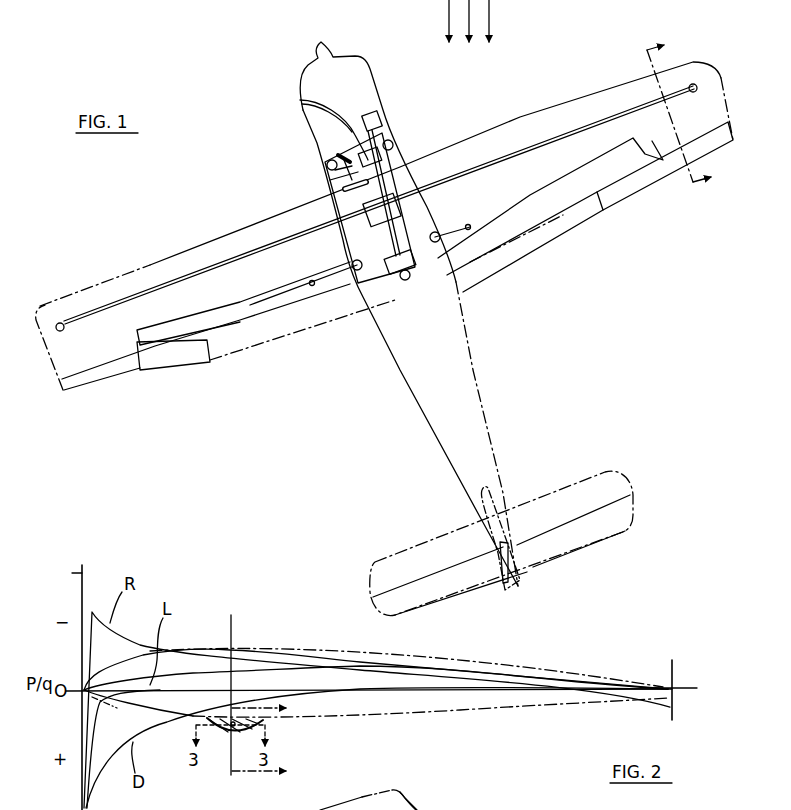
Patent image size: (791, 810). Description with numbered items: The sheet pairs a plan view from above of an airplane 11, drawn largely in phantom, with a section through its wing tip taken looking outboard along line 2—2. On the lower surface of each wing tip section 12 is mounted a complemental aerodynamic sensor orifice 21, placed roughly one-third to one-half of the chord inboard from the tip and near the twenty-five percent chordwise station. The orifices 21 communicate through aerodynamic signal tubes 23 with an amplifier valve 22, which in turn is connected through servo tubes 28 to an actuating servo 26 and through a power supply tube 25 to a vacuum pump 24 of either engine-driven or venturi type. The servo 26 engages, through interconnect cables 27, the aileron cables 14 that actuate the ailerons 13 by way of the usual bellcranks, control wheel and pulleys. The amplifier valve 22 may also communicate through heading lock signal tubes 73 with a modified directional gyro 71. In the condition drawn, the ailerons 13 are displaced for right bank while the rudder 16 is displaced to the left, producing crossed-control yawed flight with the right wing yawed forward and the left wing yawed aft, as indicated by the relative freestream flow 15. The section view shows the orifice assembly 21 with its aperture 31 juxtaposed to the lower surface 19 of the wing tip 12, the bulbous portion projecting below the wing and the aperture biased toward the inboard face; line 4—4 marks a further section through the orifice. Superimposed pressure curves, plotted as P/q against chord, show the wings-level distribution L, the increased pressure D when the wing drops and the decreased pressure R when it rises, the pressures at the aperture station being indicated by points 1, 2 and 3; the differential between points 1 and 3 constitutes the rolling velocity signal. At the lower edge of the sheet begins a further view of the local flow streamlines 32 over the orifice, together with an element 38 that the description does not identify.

In FIG. 2, the pressure point 1 is at (237, 705).
In FIG. 1, the pressure point 2 is at (686, 111).
In FIG. 2, the pressure point 2 is at (238, 695).
In FIG. 2, the pressure point 3 is at (240, 655).
In FIG. 2, the section line 4— 4 is at (271, 742).
In FIG. 1, the airplane 11 is at (433, 390).
In FIG. 1, the wing tip section 12 is at (34, 330).
In FIG. 2, the wing tip section 12 is at (577, 673).
In FIG. 1, the aileron 13 is at (165, 366).
In FIG. 1, the aileron cable 14 is at (253, 302).
In FIG. 1, the relative freestream flow 15 is at (490, 15).
In FIG. 1, the rudder 16 is at (517, 585).
In FIG. 2, the lower surface 19 is at (473, 712).
In FIG. 1, the aerodynamic sensor orifice 21 is at (60, 322).
In FIG. 2, the aerodynamic sensor orifice 21 is at (226, 736).
In FIG. 1, the amplifier valve 22 is at (337, 205).
In FIG. 1, the aerodynamic signal tube 23 is at (153, 288).
In FIG. 1, the vacuum pump 24 is at (372, 113).
In FIG. 1, the power supply tube 25 is at (377, 150).
In FIG. 1, the actuating servo 26 is at (425, 270).
In FIG. 1, the interconnect cable 27 is at (343, 273).
In FIG. 1, the servo tube 28 is at (402, 240).
In FIG. 2, the aperture 31 is at (240, 738).
In FIG. 2, the local flow streamline 32 is at (408, 808).
In FIG. 2, the wing section element 38 is at (651, 807).
In FIG. 1, the modified directional gyro 71 is at (297, 100).
In FIG. 1, the heading lock signal tube 73 is at (328, 162).